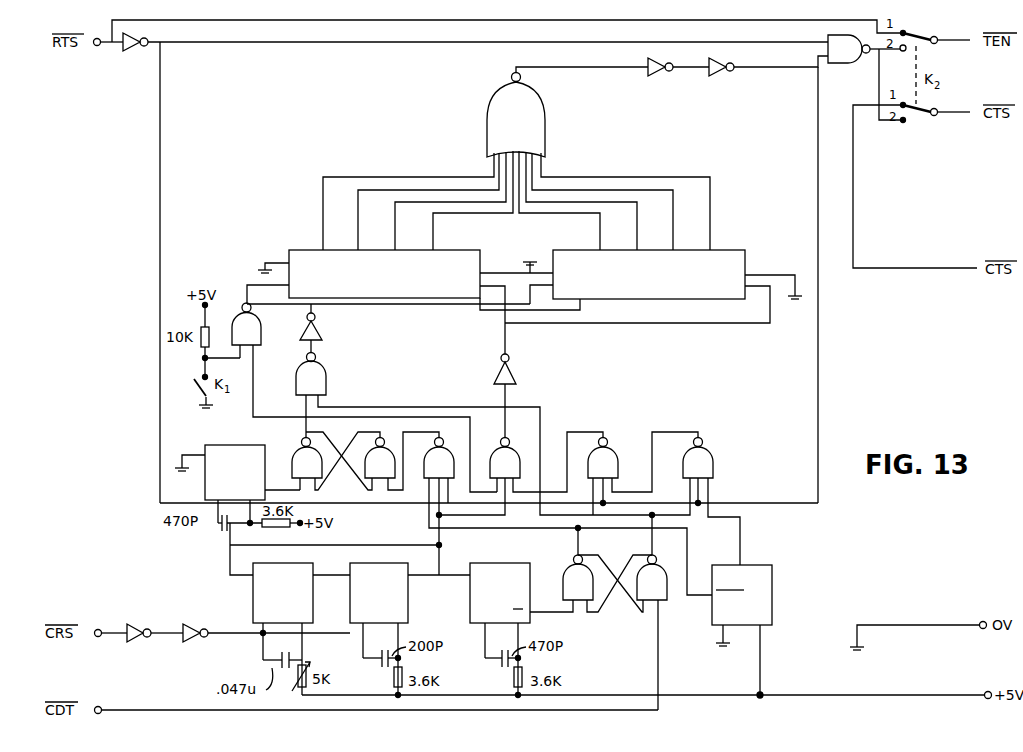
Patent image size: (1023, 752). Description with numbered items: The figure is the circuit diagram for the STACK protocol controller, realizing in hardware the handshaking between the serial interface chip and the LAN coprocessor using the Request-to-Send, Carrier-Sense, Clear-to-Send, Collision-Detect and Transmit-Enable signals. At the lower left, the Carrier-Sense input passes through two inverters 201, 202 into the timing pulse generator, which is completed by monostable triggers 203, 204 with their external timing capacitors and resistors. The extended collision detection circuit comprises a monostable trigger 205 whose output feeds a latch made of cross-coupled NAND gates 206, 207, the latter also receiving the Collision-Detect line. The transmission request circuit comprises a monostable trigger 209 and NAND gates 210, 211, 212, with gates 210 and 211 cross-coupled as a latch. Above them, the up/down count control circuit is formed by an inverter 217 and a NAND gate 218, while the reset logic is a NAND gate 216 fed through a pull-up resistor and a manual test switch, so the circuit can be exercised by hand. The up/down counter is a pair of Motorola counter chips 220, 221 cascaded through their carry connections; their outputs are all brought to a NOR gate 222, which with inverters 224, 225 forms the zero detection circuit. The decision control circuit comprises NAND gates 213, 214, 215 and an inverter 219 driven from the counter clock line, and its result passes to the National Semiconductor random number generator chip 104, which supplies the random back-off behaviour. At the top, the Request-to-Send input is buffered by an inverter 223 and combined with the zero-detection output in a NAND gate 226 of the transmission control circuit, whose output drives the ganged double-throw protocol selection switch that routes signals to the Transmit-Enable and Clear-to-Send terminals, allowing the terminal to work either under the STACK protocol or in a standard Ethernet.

The random number generator chip MM 5437 104 is at (768, 593).
The inverter 201 is at (130, 641).
The inverter 202 is at (192, 641).
The monostable trigger 203 is at (253, 582).
The monostable trigger 204 is at (378, 619).
The monostable trigger 205 is at (470, 597).
The NAND gate 206 is at (569, 566).
The NAND gate 207 is at (656, 593).
The monostable trigger 209 is at (228, 445).
The NAND gate 210 is at (298, 450).
The NAND gate 211 is at (386, 458).
The NAND gate 212 is at (446, 458).
The NAND gate 213 is at (510, 453).
The NAND gate 214 is at (605, 452).
The NAND gate 215 is at (708, 455).
The NAND gate 216 is at (250, 348).
The inverter 217 is at (322, 334).
The NAND gate 218 is at (323, 377).
The inverter 219 is at (515, 372).
The counter chip MC1-4516 220 is at (312, 249).
The counter chip MC1-4516 221 is at (726, 249).
The NOR gate 222 is at (535, 112).
The inverter 223 is at (133, 52).
The inverter 224 is at (657, 77).
The inverter 225 is at (716, 77).
The NAND gate 226 is at (833, 64).